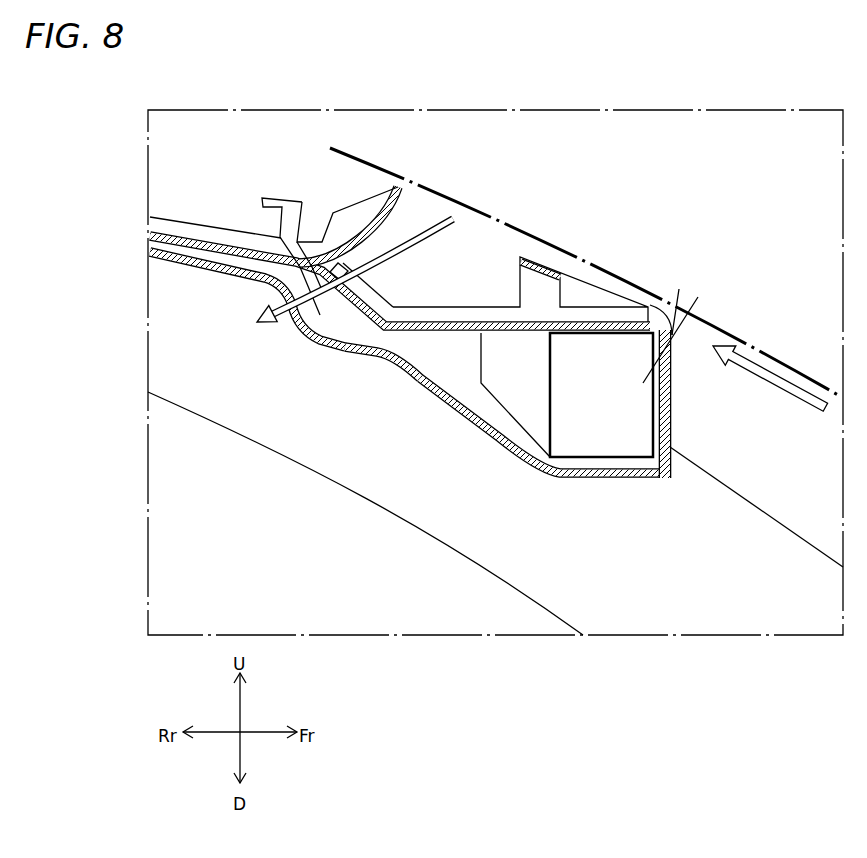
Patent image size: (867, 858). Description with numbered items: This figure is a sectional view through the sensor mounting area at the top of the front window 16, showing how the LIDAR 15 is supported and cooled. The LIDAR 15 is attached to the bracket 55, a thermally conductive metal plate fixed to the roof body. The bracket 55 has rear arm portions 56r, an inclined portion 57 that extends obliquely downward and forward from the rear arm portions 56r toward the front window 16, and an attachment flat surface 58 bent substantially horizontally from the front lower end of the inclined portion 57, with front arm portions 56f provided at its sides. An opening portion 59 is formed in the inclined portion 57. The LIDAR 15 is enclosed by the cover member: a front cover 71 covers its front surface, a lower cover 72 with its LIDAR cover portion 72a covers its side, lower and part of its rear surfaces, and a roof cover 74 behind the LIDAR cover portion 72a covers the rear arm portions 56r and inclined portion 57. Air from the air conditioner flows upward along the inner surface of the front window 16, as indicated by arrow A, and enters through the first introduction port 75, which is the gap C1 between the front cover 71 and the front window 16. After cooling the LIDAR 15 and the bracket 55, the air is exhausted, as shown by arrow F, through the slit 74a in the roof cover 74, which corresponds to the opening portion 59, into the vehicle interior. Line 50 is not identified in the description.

The LIDAR 15 is at (618, 443).
The front window 16 is at (760, 344).
The vehicle body lower structure 50 is at (490, 468).
The bracket 55 is at (452, 318).
The rear arm portion 56r is at (283, 194).
The front arm portion 56f is at (537, 262).
The inclined portion 57 is at (354, 290).
The attachment flat surface 58 is at (463, 334).
The opening portion 59 is at (370, 295).
The front cover 71 is at (670, 423).
The lower cover 72 is at (577, 480).
The LIDAR cover portion 72a is at (378, 356).
The roof cover 74 is at (173, 256).
The slit 74a is at (273, 293).
The first introduction port 75 is at (680, 324).
The gap C1 is at (678, 300).
The arrow F is at (355, 262).
The arrow A is at (770, 387).